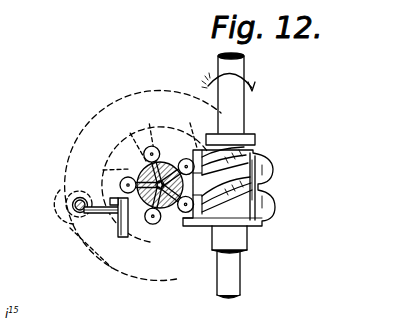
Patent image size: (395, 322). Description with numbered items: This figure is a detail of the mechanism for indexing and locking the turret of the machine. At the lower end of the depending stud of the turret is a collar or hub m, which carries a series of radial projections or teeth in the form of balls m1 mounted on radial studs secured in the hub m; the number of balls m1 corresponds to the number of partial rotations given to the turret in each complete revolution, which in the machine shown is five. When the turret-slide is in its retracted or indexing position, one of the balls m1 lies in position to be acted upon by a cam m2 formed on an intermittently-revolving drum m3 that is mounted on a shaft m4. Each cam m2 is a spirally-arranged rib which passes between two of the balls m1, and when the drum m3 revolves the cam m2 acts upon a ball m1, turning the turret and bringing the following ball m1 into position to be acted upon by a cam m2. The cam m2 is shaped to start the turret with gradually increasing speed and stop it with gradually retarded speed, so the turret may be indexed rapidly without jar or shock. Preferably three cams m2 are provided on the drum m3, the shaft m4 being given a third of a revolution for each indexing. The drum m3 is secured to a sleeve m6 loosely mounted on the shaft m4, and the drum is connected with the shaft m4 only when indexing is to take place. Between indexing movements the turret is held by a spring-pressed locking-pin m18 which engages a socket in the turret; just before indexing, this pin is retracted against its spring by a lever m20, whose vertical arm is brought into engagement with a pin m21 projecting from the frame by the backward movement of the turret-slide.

The collar or hub m is at (178, 158).
The balls m1 is at (148, 146).
The cam m2 is at (198, 150).
The drum m3 is at (228, 217).
The shaft m4 is at (241, 278).
The sleeve m6 is at (248, 242).
The locking-pin m18 is at (79, 196).
The lever m20 is at (100, 217).
The pin m21 is at (123, 231).